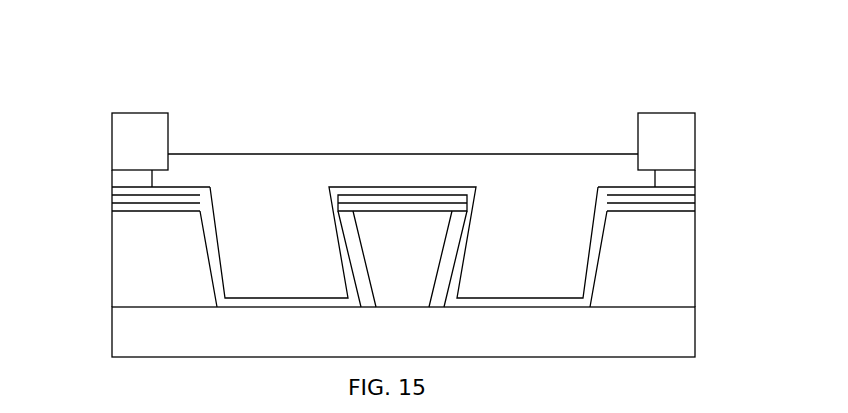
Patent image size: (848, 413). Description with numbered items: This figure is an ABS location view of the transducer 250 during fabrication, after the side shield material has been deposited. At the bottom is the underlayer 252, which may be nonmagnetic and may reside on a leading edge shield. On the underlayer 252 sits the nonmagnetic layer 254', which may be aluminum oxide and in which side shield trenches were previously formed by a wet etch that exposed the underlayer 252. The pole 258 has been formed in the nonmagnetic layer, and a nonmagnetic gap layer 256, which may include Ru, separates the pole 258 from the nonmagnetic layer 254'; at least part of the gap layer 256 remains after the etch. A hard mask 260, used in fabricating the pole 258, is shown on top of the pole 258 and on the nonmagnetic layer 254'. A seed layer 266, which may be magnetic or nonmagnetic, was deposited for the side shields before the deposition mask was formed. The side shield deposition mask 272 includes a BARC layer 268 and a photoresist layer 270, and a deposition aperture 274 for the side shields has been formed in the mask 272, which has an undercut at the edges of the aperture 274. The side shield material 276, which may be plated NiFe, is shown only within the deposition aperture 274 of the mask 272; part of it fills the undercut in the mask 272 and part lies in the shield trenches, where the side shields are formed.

The transducer 250 is at (365, 43).
The underlayer 252 is at (112, 350).
The nonmagnetic layer 254' is at (403, 261).
The nonmagnetic gap layer 256 is at (466, 242).
The pole 258 is at (375, 208).
The hard mask 260 is at (112, 199).
The seed layer 266 is at (310, 298).
The BARC layer 268 is at (112, 177).
The photoresist layer 270 is at (112, 150).
The side shield deposition mask 272 is at (142, 90).
The deposition aperture 274 is at (383, 114).
The side shield material 276 is at (540, 154).